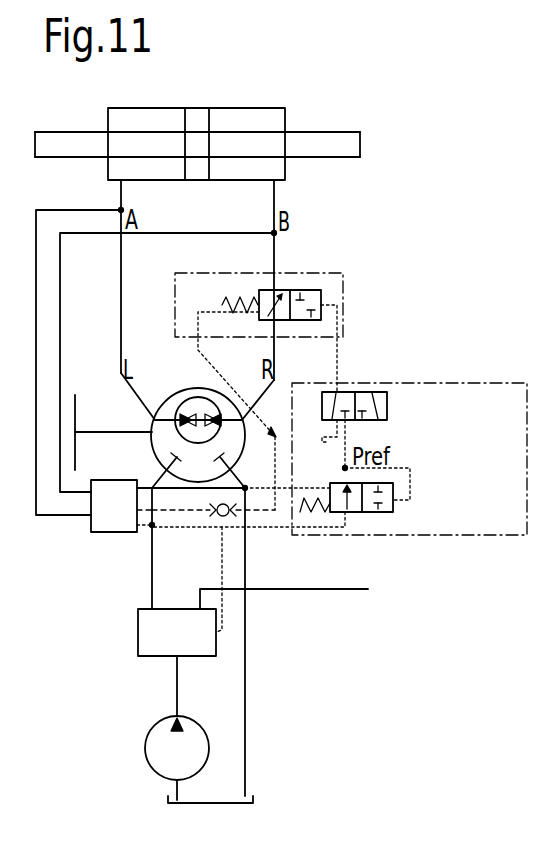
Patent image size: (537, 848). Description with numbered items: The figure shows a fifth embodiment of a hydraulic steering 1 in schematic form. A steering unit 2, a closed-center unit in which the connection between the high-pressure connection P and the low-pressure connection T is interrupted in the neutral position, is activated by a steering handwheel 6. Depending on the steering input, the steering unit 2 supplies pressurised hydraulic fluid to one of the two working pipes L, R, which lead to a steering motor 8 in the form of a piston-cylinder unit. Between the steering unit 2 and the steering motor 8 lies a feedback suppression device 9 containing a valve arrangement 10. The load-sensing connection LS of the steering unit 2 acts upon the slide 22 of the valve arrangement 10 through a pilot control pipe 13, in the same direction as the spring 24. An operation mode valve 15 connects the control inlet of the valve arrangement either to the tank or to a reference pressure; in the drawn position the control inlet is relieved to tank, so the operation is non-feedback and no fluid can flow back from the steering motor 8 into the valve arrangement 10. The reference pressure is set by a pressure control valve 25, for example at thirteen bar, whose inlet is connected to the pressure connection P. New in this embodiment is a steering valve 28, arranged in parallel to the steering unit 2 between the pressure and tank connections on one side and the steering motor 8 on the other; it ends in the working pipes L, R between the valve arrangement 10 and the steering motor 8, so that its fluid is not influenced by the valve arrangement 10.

The steering 1 is at (333, 98).
The steering unit 2 is at (149, 422).
The steering handwheel 6 is at (75, 418).
The steering motor 8 is at (258, 107).
The feedback suppression device 9 is at (399, 347).
The valve arrangement 10 is at (345, 290).
The pilot control pipe 13 is at (197, 350).
The operation mode valve 15 is at (398, 411).
The slide 22 is at (292, 289).
The spring 24 is at (223, 295).
The pressure control valve 25 is at (391, 522).
The steering valve 28 is at (112, 536).